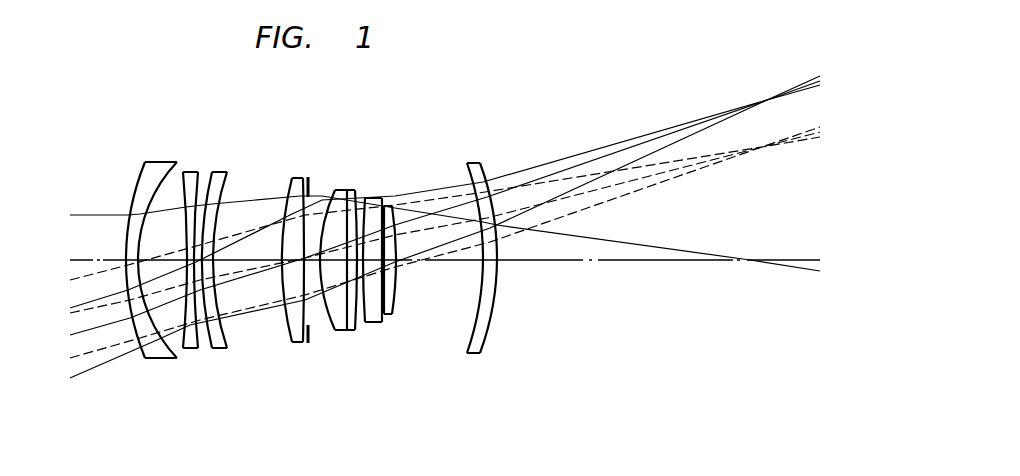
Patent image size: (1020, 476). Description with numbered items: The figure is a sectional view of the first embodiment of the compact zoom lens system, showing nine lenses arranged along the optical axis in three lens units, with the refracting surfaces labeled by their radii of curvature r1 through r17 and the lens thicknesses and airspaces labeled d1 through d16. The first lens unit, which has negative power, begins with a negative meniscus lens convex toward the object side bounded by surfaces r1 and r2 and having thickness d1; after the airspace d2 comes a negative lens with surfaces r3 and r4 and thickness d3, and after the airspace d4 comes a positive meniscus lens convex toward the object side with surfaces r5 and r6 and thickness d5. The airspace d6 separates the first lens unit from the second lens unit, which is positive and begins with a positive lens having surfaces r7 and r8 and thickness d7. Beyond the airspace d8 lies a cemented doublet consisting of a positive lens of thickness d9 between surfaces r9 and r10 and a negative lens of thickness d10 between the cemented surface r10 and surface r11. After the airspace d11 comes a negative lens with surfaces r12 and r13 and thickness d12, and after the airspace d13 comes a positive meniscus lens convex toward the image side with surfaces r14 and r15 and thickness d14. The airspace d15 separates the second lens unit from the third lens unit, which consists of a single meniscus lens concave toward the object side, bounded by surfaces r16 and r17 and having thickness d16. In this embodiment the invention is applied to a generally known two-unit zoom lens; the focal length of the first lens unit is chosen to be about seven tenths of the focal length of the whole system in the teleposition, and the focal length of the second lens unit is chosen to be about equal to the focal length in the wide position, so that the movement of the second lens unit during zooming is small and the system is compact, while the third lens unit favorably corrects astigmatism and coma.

The thickness of first lens d1 is at (127, 213).
The airspace between first and second lenses d2 is at (150, 255).
The thickness of second lens d3 is at (189, 235).
The airspace between second and third lenses d4 is at (199, 245).
The thickness of third lens d5 is at (208, 235).
The airspace between first and second lens units d6 is at (250, 245).
The thickness of fourth lens d7 is at (290, 240).
The airspace between fourth and fifth lenses d8 is at (306, 215).
The thickness of fifth lens d9 is at (330, 235).
The thickness of sixth lens d10 is at (351, 230).
The airspace between sixth and seventh lenses d11 is at (360, 240).
The thickness of seventh lens d12 is at (373, 230).
The airspace between seventh and eighth lenses d13 is at (385, 235).
The thickness of eighth lens d14 is at (396, 232).
The airspace between second and third lens units d15 is at (450, 258).
The thickness of ninth lens d16 is at (490, 268).
The radius of curvature of first lens surface r1 is at (141, 355).
The radius of curvature of second lens surface r2 is at (172, 358).
The radius of curvature of third lens surface r3 is at (184, 349).
The radius of curvature of fourth lens surface r4 is at (199, 349).
The radius of curvature of fifth lens surface r5 is at (214, 349).
The radius of curvature of sixth lens surface r6 is at (228, 349).
The radius of curvature of seventh lens surface r7 is at (291, 341).
The radius of curvature of eighth lens surface r8 is at (302, 343).
The radius of curvature of ninth lens surface r9 is at (335, 331).
The radius of curvature of tenth lens surface r10 is at (347, 331).
The radius of curvature of eleventh lens surface r11 is at (356, 331).
The radius of curvature of twelfth lens surface r12 is at (370, 323).
The radius of curvature of thirteenth lens surface r13 is at (383, 318).
The radius of curvature of fourteenth lens surface r14 is at (390, 315).
The radius of curvature of fifteenth lens surface r15 is at (395, 305).
The radius of curvature of sixteenth lens surface r16 is at (468, 354).
The radius of curvature of seventeenth lens surface r17 is at (481, 354).